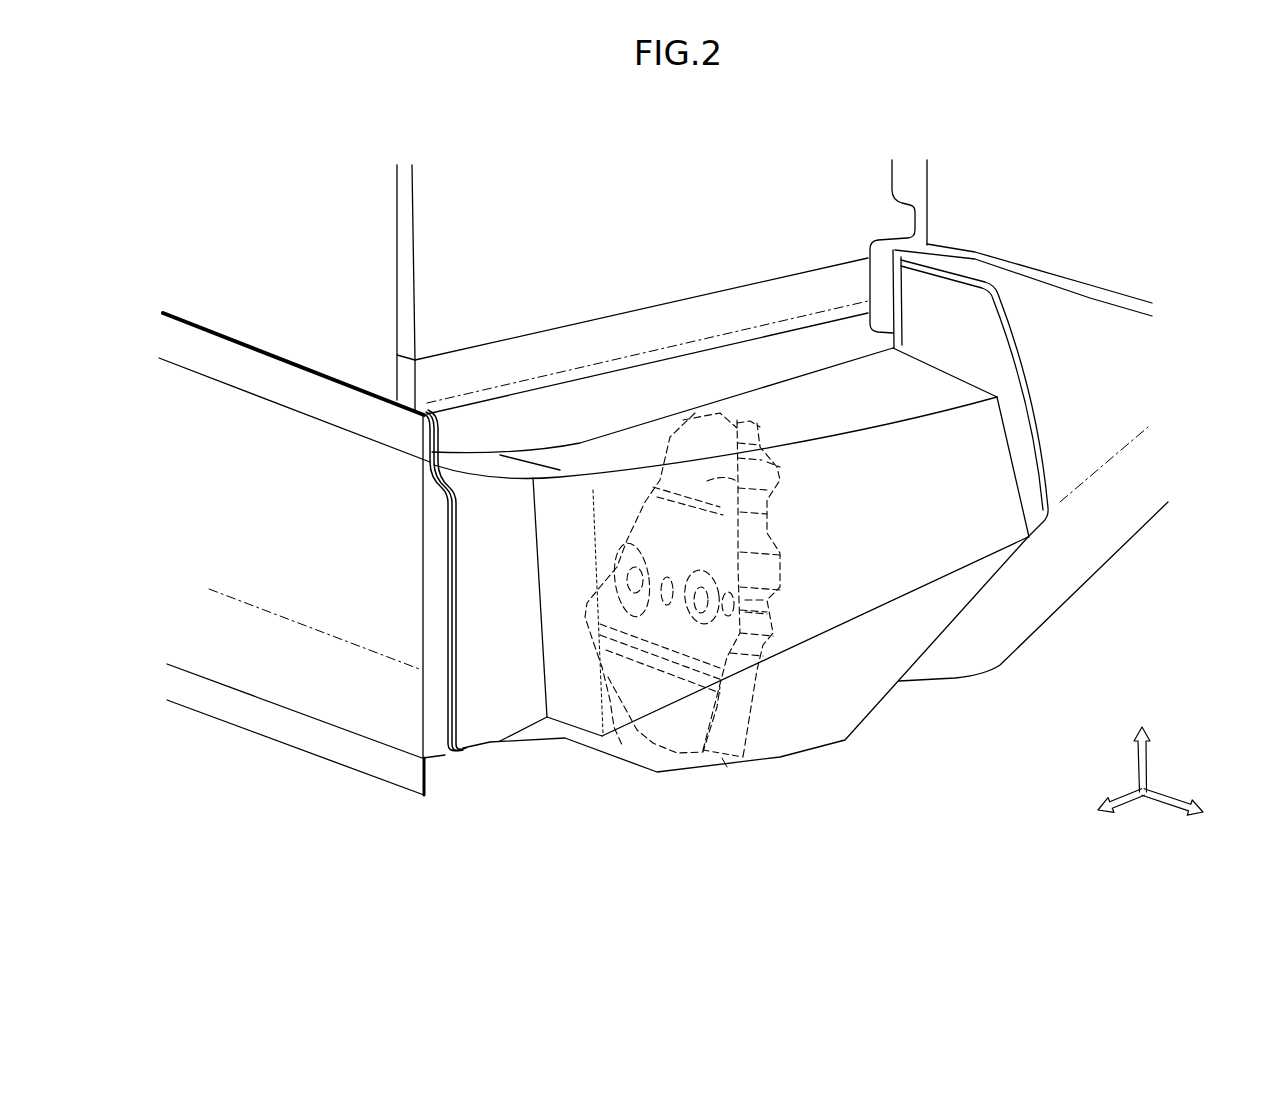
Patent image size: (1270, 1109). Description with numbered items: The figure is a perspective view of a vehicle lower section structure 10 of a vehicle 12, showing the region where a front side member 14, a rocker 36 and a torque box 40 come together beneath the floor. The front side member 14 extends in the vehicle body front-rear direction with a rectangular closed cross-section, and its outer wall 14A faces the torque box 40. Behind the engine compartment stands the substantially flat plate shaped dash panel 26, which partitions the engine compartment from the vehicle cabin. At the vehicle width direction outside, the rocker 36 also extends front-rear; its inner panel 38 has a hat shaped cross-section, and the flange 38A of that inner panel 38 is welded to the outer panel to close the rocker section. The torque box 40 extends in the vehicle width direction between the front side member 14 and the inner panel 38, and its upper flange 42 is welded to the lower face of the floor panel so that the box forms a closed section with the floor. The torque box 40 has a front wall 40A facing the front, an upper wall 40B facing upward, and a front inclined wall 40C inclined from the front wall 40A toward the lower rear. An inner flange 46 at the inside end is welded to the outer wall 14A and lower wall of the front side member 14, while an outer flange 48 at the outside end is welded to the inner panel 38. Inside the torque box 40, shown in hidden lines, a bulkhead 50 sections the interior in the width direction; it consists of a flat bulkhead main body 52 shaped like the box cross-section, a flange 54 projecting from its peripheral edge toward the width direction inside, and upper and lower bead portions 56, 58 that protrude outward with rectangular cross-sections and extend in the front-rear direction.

The vehicle lower section structure 10 is at (630, 790).
The vehicle 12 is at (1003, 186).
The front side member 14 is at (950, 188).
The outer wall 14A is at (1067, 313).
The dash panel 26 is at (447, 213).
The rocker 36 is at (300, 765).
The inner panel 38 is at (258, 458).
The flange 38A is at (182, 340).
The torque box 40 is at (787, 757).
The front wall 40A is at (985, 472).
The upper wall 40B is at (787, 400).
The front inclined wall 40C is at (853, 712).
The upper flange 42 is at (597, 403).
The inner flange 46 is at (963, 307).
The outer flange 48 is at (448, 683).
The bulkhead 50 is at (727, 767).
The bulkhead main body 52 is at (612, 747).
The flange 54 is at (773, 515).
The bead portion 56 is at (773, 483).
The bead portion 58 is at (773, 611).